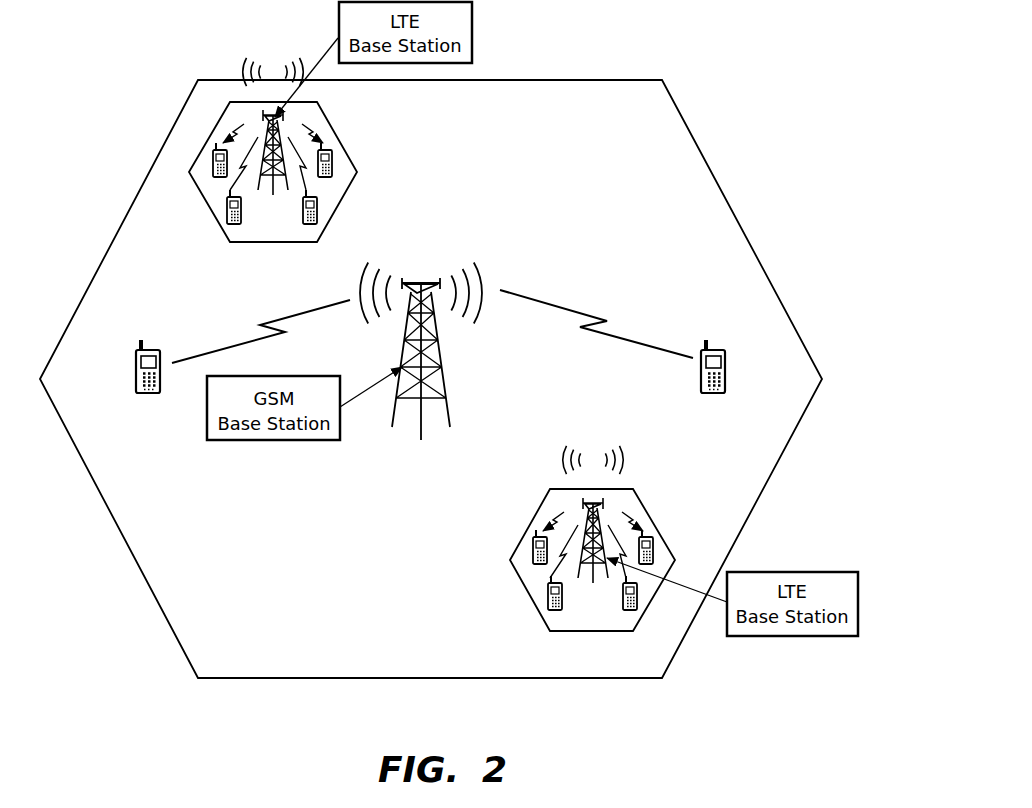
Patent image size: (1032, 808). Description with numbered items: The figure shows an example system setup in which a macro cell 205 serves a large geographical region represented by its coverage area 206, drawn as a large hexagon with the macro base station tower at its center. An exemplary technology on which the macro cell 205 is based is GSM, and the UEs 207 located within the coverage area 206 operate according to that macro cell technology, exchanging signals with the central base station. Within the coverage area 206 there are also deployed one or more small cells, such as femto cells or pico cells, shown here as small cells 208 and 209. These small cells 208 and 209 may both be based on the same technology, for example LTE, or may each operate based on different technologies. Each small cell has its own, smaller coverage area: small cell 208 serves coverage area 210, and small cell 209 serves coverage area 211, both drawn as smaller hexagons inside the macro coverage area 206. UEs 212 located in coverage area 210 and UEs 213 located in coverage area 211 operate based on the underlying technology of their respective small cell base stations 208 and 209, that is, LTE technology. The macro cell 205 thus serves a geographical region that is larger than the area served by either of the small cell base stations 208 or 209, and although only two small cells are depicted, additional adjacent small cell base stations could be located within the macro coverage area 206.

The macro cell 205 is at (446, 385).
The coverage area 206 is at (708, 196).
The UEs 207 is at (148, 394).
The small cell 208 is at (272, 113).
The small cell 209 is at (593, 500).
The coverage area 210 is at (272, 244).
The coverage area 211 is at (640, 508).
The UEs 212 is at (343, 157).
The UEs 213 is at (533, 548).